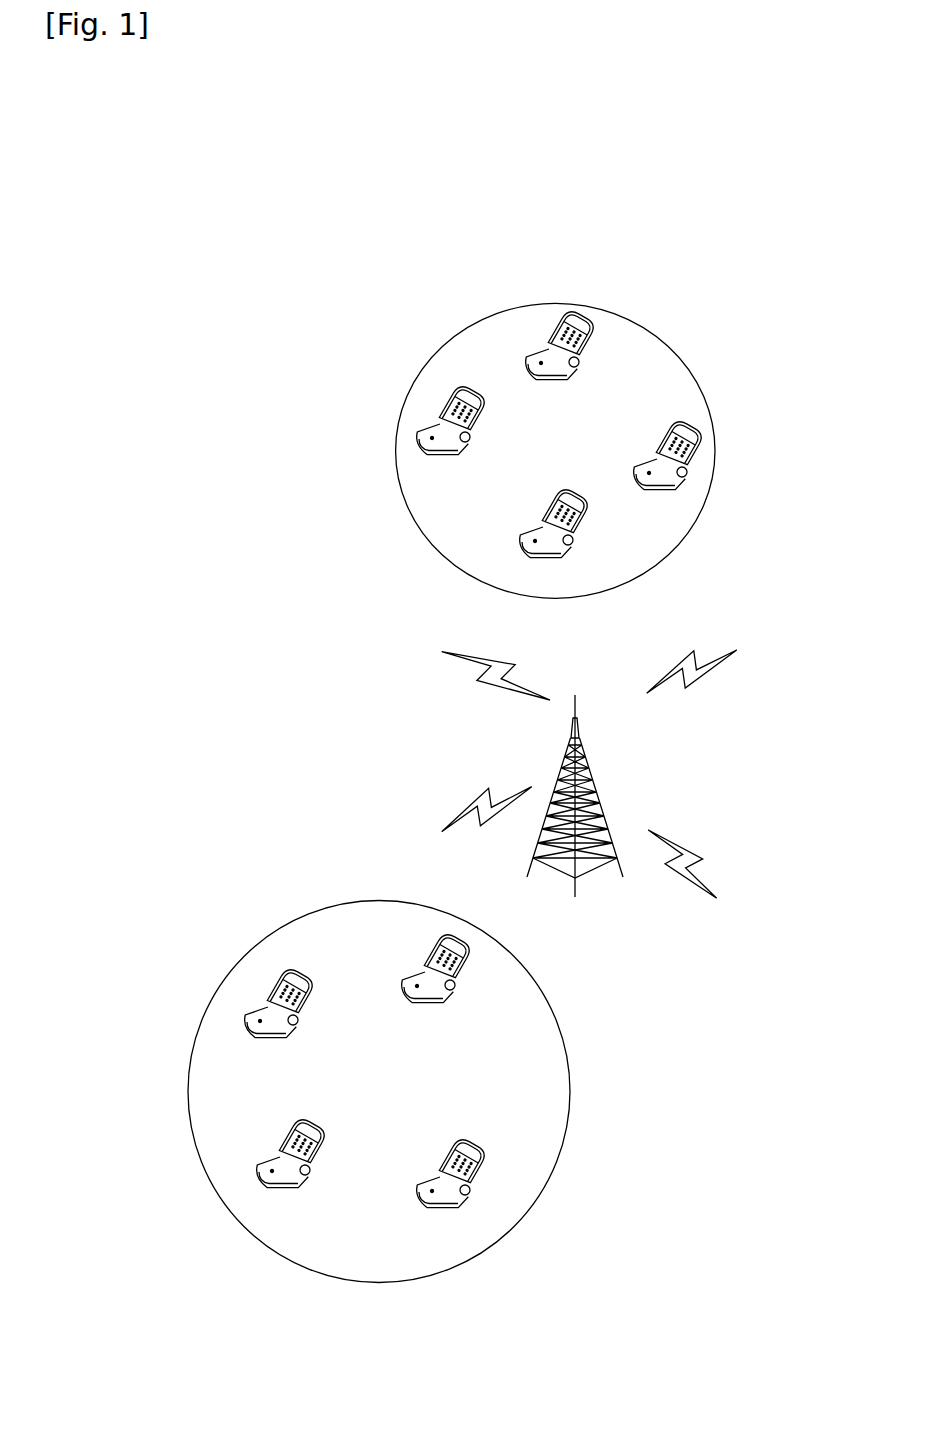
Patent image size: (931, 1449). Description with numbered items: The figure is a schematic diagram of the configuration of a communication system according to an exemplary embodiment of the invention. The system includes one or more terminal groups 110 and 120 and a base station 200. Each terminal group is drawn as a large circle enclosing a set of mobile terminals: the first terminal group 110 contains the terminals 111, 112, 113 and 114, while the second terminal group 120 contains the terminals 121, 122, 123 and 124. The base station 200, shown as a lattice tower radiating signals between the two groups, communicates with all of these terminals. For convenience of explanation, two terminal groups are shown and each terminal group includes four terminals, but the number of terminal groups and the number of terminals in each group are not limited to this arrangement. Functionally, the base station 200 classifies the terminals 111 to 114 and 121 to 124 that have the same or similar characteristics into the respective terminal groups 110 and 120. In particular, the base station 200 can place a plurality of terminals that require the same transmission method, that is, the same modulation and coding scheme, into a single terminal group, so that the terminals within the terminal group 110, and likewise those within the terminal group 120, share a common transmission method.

The terminal group 110 is at (699, 376).
The terminal 111 is at (597, 308).
The terminal 112 is at (700, 456).
The terminal 113 is at (580, 525).
The terminal 114 is at (428, 424).
The terminal group 120 is at (456, 1268).
The terminal 121 is at (483, 1177).
The terminal 122 is at (468, 975).
The terminal 123 is at (275, 983).
The terminal 124 is at (280, 1148).
The base station 200 is at (577, 704).